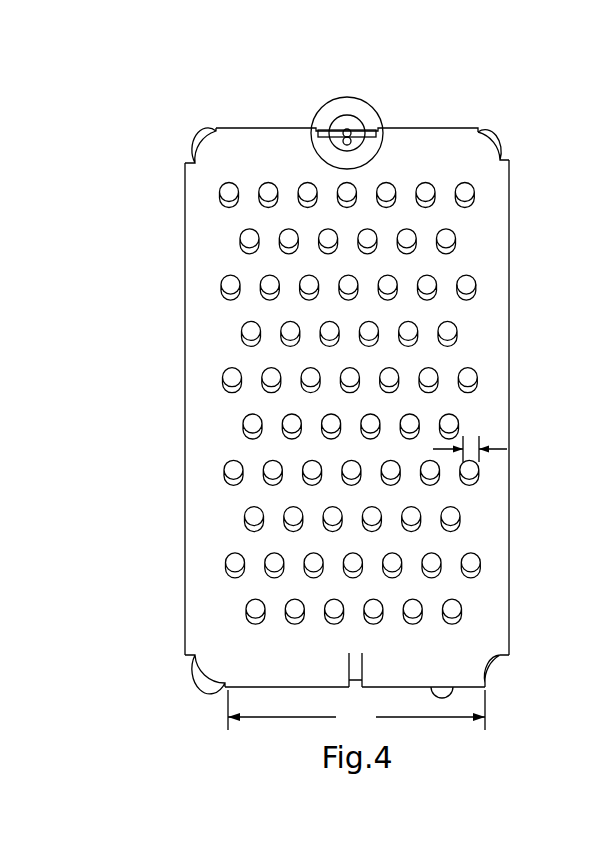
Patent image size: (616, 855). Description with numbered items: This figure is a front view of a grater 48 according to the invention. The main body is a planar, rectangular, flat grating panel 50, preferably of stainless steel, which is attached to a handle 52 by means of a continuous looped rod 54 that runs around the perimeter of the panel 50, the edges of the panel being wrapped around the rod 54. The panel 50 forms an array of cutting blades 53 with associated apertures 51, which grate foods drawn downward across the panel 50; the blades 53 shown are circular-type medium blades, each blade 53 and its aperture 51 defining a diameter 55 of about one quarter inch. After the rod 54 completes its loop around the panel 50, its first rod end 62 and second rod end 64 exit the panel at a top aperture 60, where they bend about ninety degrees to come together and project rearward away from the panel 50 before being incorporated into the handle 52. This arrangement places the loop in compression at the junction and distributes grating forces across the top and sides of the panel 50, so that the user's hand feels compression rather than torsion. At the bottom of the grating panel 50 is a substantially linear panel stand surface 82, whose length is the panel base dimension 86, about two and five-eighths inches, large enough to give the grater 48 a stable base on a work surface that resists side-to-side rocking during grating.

The grater 48 is at (258, 106).
The grating panel 50 is at (225, 512).
The aperture 51 is at (470, 280).
The handle 52 is at (355, 108).
The cutting blade 53 is at (474, 296).
The continuous looped rod 54 is at (203, 140).
The diameter 55 is at (470, 443).
The top aperture 60 is at (380, 141).
The first rod end 62 is at (327, 130).
The second rod end 64 is at (372, 126).
The panel stand surface 82 is at (455, 687).
The panel base dimension 86 is at (356, 710).